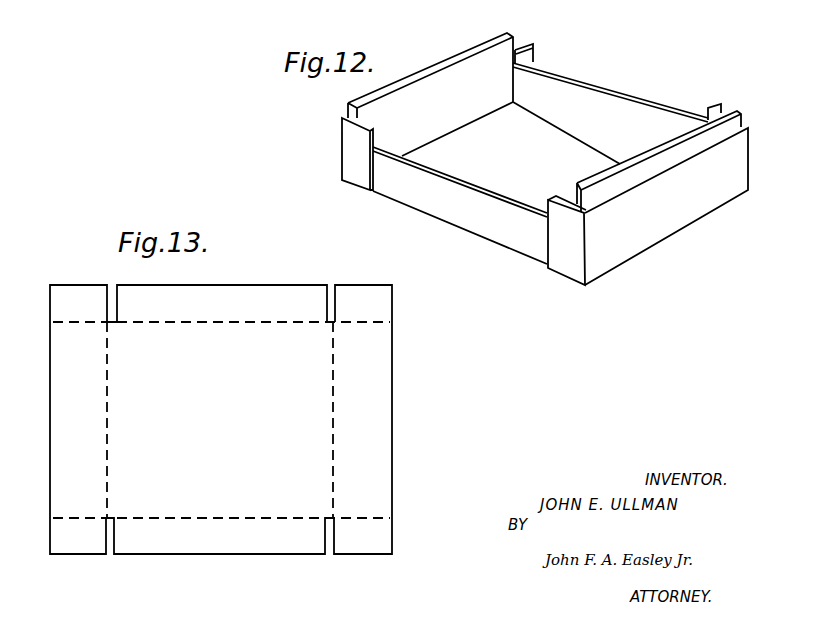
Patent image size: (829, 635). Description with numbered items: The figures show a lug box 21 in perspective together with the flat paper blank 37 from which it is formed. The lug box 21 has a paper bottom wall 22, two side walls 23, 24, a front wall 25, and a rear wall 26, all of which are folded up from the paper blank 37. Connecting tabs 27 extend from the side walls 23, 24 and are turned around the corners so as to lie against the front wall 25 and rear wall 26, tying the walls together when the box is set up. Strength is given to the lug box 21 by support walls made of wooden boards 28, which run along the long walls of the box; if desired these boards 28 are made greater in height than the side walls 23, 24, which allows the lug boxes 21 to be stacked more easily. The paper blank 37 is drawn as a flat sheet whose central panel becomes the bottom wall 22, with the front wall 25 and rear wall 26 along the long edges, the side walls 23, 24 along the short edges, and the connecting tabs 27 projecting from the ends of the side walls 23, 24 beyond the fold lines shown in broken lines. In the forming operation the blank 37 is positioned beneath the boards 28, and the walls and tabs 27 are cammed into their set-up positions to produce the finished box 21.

In FIG. 12, the lug box 21 is at (553, 60).
In FIG. 12, the paper bottom wall 22 is at (563, 130).
In FIG. 13, the paper bottom wall 22 is at (277, 343).
In FIG. 12, the side wall 23 is at (347, 115).
In FIG. 13, the side wall 23 is at (50, 389).
In FIG. 12, the side wall 24 is at (661, 226).
In FIG. 13, the side wall 24 is at (384, 449).
In FIG. 12, the front wall 25 is at (433, 203).
In FIG. 13, the front wall 25 is at (201, 548).
In FIG. 12, the rear wall 26 is at (658, 115).
In FIG. 13, the rear wall 26 is at (240, 298).
In FIG. 12, the connecting tabs 27 is at (350, 154).
In FIG. 13, the connecting tabs 27 is at (60, 292).
In FIG. 12, the wooden boards 28 is at (445, 73).
In FIG. 13, the paper blank 37 is at (405, 379).